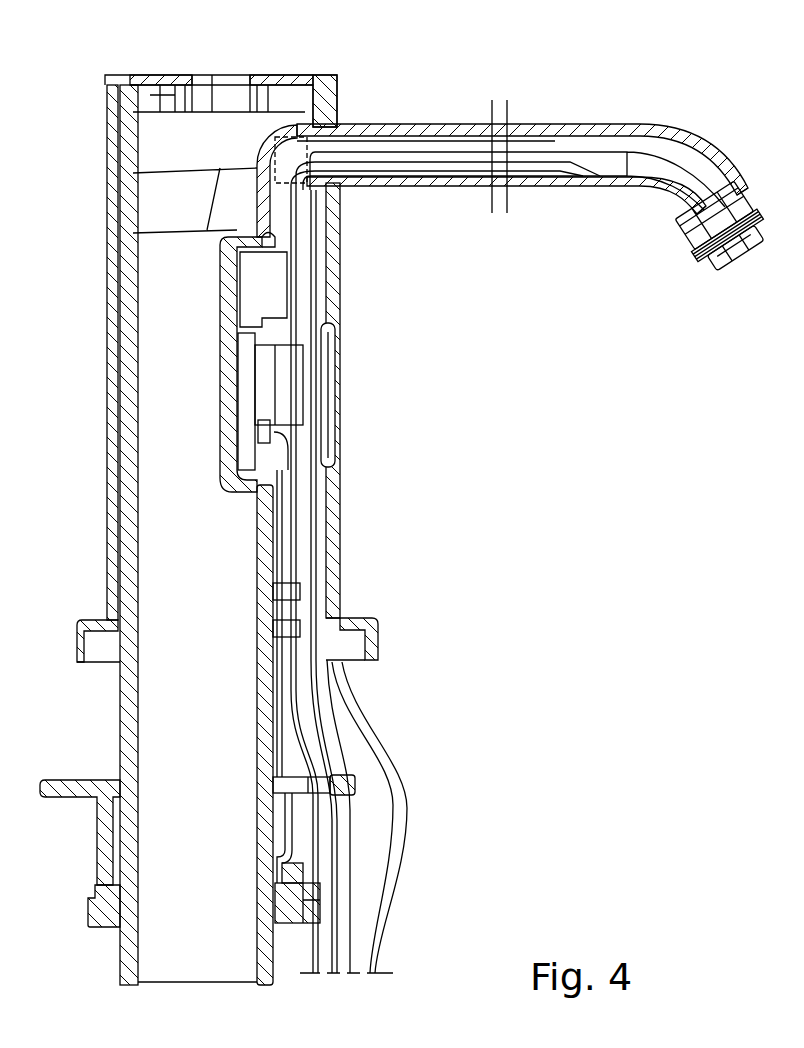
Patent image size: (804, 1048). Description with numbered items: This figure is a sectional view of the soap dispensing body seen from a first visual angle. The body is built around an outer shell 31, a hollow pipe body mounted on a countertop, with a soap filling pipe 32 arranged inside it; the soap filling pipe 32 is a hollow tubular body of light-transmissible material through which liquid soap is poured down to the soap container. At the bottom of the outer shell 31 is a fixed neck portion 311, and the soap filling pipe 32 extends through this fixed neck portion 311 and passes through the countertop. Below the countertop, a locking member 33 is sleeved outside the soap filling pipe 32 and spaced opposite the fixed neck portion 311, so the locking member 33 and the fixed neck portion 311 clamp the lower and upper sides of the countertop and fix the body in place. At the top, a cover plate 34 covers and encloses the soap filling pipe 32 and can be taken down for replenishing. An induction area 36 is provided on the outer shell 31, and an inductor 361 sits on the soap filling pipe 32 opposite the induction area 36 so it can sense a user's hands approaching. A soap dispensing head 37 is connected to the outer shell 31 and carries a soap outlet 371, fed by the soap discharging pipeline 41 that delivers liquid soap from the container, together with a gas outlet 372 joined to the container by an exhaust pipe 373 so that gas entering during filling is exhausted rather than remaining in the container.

The outer shell 31 is at (107, 183).
The soap filling pipe 32 is at (114, 453).
The locking member 33 is at (352, 780).
The cover plate 34 is at (250, 75).
The induction area 36 is at (340, 368).
The inductor 361 is at (300, 400).
The fixed neck portion 311 is at (380, 636).
The soap dispensing head 37 is at (716, 191).
The soap outlet 371 is at (726, 272).
The gas outlet 372 is at (600, 180).
The exhaust pipe 373 is at (548, 172).
The soap discharging pipeline 41 is at (598, 140).